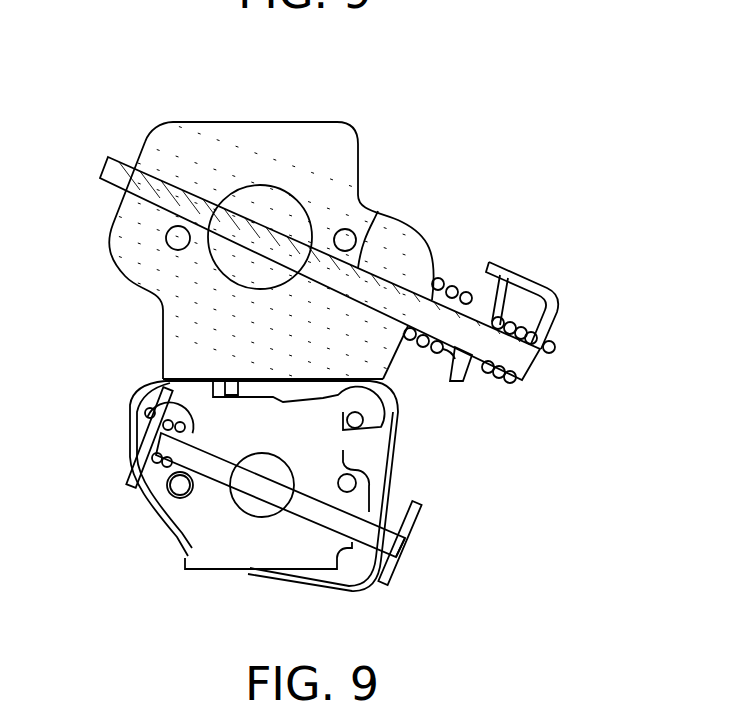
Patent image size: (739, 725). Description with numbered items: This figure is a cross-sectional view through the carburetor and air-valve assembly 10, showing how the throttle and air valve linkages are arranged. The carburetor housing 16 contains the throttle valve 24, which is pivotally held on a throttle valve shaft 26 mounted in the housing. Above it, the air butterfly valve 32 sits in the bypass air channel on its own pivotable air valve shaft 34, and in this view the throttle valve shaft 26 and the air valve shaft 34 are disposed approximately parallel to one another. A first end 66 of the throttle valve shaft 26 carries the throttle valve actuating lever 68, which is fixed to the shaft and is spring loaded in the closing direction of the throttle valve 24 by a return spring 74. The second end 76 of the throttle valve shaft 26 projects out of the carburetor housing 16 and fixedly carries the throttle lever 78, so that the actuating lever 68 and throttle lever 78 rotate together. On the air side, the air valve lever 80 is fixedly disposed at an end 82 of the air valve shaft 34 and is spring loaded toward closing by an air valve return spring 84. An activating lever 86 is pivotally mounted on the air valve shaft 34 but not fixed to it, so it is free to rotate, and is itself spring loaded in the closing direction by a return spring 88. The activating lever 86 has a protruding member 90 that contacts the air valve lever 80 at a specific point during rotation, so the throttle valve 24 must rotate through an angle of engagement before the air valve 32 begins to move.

The vehicle seat latch assembly 10 is at (189, 86).
The carburetor housing 16 is at (288, 552).
The throttle valve 24 is at (255, 520).
The throttle valve shaft 26 is at (362, 580).
The air butterfly valve 32 is at (283, 188).
The air valve shaft 34 is at (378, 211).
The first end of the throttle valve shaft 66 is at (130, 418).
The throttle valve actuating lever 68 is at (130, 481).
The return spring 74 is at (132, 494).
The second end of the throttle valve shaft 76 is at (406, 558).
The throttle lever 78 is at (422, 504).
The air valve lever 80 is at (556, 330).
The end of the air valve shaft 82 is at (537, 370).
The air valve return spring 84 is at (552, 290).
The activating lever 86 is at (460, 388).
The return spring 88 is at (434, 279).
The protruding member 90 is at (510, 267).